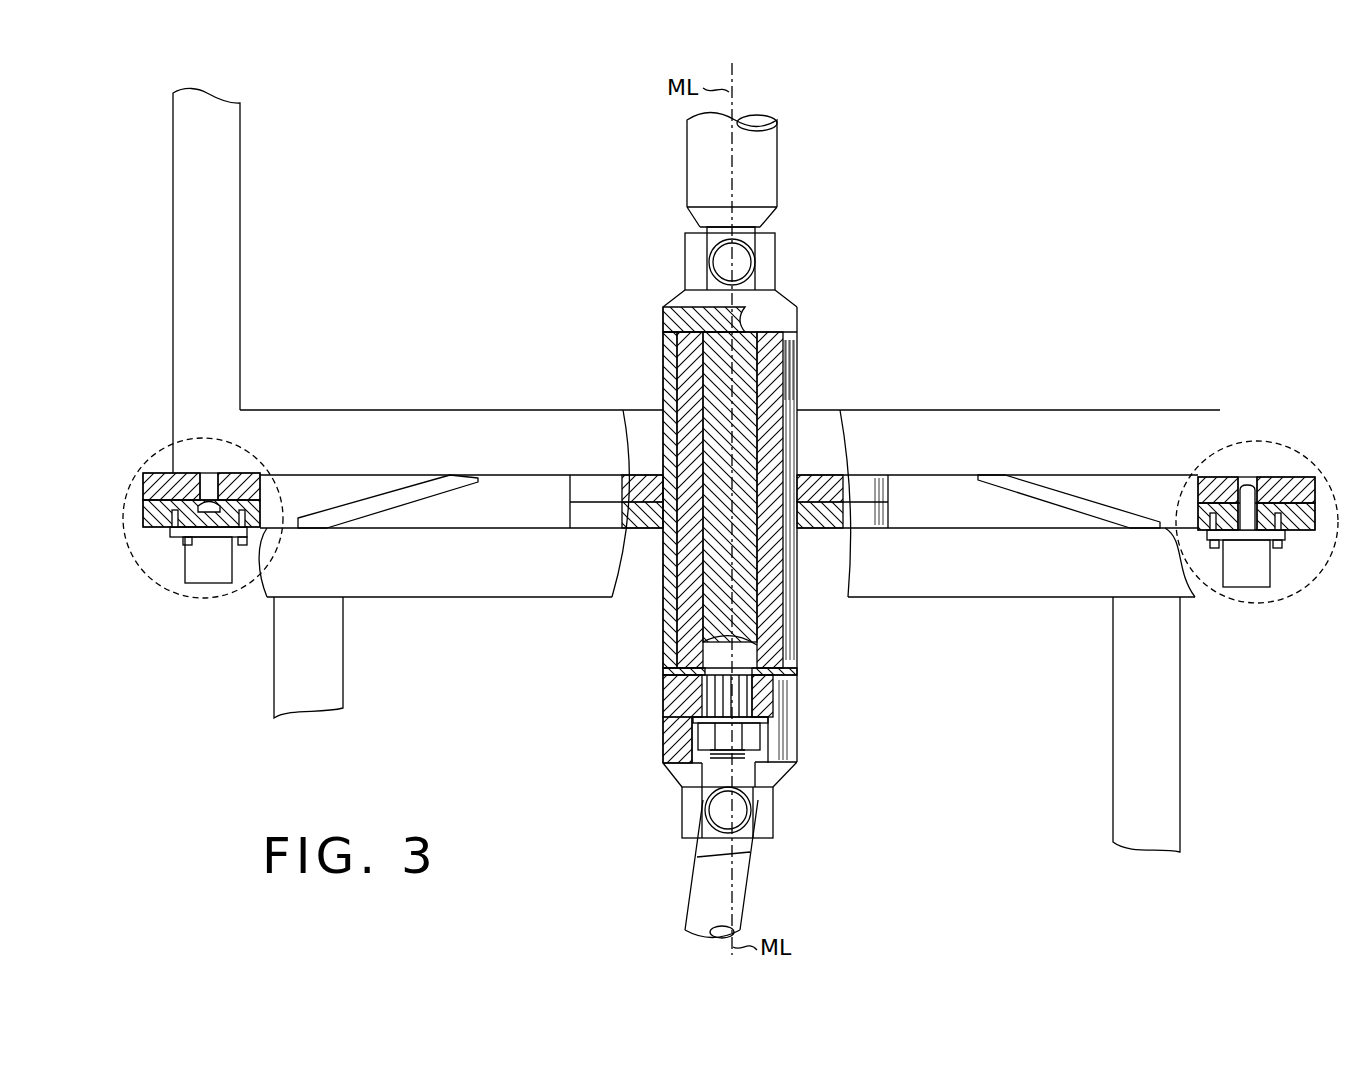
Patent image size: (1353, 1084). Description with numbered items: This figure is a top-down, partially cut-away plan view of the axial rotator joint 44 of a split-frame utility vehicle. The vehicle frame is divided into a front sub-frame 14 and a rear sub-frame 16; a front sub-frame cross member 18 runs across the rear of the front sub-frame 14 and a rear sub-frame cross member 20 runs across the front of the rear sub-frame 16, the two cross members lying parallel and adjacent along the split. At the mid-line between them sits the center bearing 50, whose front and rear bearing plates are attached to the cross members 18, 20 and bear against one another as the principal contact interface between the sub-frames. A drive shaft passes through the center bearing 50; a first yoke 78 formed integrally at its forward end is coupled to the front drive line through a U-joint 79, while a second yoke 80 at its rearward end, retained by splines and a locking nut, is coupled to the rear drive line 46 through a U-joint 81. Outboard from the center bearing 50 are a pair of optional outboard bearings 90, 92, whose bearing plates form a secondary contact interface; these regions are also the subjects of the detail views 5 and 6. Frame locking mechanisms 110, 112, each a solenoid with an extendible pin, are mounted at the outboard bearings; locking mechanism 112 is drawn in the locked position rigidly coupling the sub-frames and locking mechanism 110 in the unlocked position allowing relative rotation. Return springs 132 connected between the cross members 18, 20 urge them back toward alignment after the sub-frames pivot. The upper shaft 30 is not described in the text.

The front sub-frame 14 is at (258, 327).
The rear sub-frame 16 is at (368, 681).
The front sub-frame cross member 18 is at (470, 410).
The rear sub-frame cross member 20 is at (520, 598).
The input shaft 30 is at (696, 170).
The axial rotator joint 44 is at (814, 622).
The rear drive line 46 is at (697, 889).
The center bearing 50 is at (905, 507).
The first yoke 78 is at (792, 318).
The U-joint 79 is at (744, 258).
The second yoke 80 is at (781, 770).
The U-joint 81 is at (750, 813).
The outboard bearing 90 is at (150, 452).
The outboard bearing 92 is at (1306, 548).
The frame locking mechanism 110 is at (182, 602).
The frame locking mechanism 112 is at (1232, 608).
The return spring 132 is at (432, 492).
The detail circle of FIG. 5 is at (257, 455).
The detail circle of FIG. 6 is at (1204, 463).